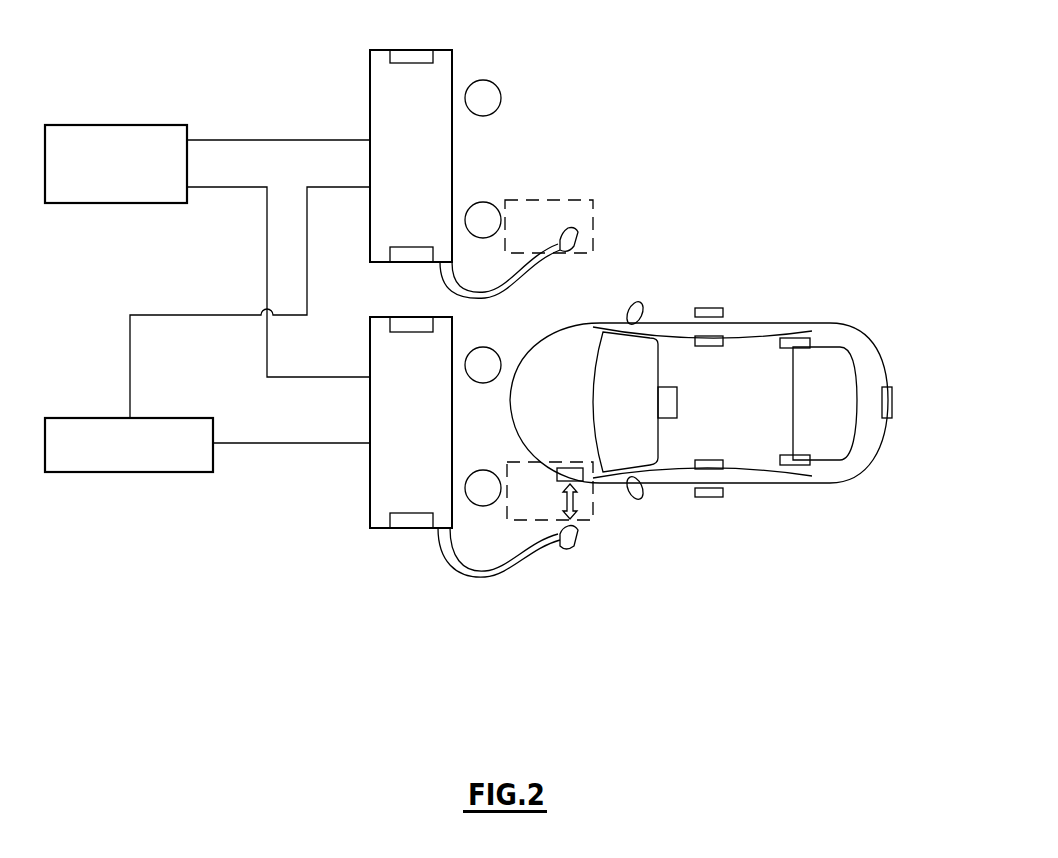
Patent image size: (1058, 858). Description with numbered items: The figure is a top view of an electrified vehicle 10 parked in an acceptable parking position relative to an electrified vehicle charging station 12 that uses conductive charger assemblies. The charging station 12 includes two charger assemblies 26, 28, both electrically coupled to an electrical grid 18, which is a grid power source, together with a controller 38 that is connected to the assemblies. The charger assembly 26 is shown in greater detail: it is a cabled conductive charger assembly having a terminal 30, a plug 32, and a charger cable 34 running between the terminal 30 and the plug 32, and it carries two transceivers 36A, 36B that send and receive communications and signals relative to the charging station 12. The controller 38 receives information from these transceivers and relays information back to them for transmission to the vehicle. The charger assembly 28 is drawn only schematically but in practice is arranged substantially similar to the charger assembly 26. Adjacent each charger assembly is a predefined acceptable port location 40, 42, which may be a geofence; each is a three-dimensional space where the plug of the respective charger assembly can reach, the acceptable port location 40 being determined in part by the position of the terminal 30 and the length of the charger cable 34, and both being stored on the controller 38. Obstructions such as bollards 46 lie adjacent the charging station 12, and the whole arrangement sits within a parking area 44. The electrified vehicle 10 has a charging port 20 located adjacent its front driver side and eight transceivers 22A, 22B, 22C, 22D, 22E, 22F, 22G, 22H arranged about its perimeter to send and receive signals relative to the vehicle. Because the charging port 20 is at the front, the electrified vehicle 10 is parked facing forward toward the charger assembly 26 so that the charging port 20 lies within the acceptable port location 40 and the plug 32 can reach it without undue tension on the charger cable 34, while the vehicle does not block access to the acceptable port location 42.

The electrified vehicle 10 is at (738, 399).
The electrified vehicle charging station 12 is at (338, 637).
The electrical grid 18 is at (115, 125).
The charging port 20 is at (572, 468).
The transceiver 22A is at (677, 402).
The transceiver 22B is at (710, 308).
The transceiver 22C is at (725, 336).
The transceiver 22D is at (800, 338).
The transceiver 22E is at (893, 405).
The transceiver 22F is at (803, 465).
The transceiver 22G is at (718, 497).
The transceiver 22H is at (712, 460).
The charger assembly 26 is at (396, 304).
The charger assembly 28 is at (362, 84).
The terminal 30 is at (388, 433).
The plug 32 is at (580, 542).
The charger cable 34 is at (545, 553).
The transceiver 36A is at (413, 324).
The transceiver 36B is at (412, 527).
The controller 38 is at (172, 418).
The acceptable port location 40 is at (596, 514).
The acceptable port location 42 is at (594, 216).
The parking area 44 is at (754, 86).
The bollards 46 is at (481, 116).